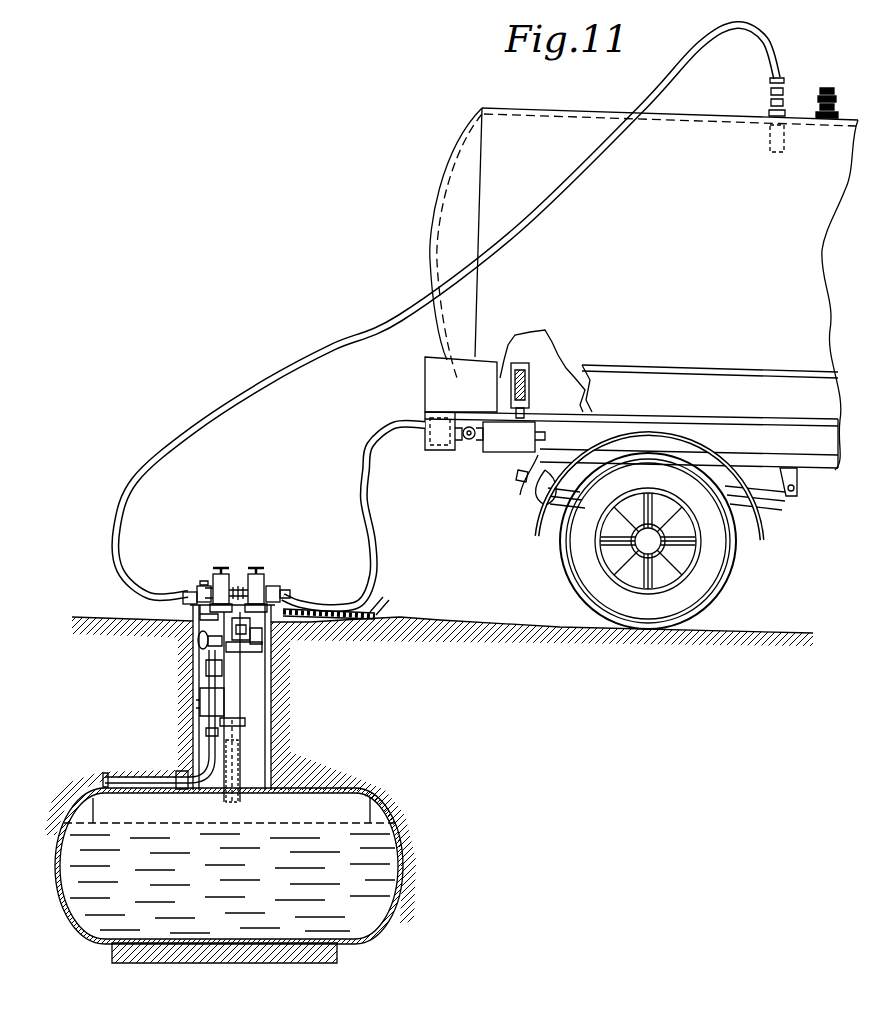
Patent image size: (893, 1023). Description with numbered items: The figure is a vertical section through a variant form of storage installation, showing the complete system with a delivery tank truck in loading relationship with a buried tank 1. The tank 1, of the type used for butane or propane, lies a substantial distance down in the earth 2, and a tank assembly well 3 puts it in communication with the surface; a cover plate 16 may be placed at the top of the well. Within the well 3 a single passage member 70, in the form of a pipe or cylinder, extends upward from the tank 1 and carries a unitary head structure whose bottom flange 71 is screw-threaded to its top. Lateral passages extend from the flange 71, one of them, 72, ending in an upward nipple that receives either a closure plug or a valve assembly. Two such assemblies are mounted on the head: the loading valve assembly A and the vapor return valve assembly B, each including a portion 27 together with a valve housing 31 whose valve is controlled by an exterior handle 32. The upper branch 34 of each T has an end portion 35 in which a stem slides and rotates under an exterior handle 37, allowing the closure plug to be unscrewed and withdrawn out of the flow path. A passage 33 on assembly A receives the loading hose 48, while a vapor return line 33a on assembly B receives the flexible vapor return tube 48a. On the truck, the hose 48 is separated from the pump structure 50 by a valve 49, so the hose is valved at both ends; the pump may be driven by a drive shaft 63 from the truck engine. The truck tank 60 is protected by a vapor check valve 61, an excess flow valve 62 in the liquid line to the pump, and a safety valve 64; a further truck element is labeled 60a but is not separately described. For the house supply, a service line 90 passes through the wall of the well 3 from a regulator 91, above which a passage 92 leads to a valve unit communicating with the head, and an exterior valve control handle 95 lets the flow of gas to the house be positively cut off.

The buried tank 1 is at (348, 792).
The earth 2 is at (415, 627).
The tank assembly well 3 is at (190, 714).
The cover plate 16 is at (318, 612).
The valve assembly portion 27 is at (239, 626).
The valve housing 31 is at (199, 586).
The exterior handle 32 is at (205, 578).
The passage 33 is at (283, 592).
The vapor return line 33a is at (188, 603).
The upper branch of the T 34 is at (215, 570).
The end portion 35 is at (200, 616).
The exterior handle 37 is at (236, 573).
The hose 48 is at (382, 533).
The flexible vapor return tube 48a is at (275, 372).
The valve 49 is at (470, 447).
The pump structure 50 is at (500, 455).
The tank 60 is at (450, 162).
The truck wheel 60a is at (712, 568).
The vapor check valve 61 is at (770, 140).
The excess flow valve 62 is at (530, 375).
The drive shaft 63 is at (526, 483).
The safety valve 64 is at (832, 92).
The single passage member 70 is at (236, 756).
The bottom flange 71 is at (258, 652).
The lateral extension 72 is at (262, 640).
The service line 90 is at (207, 768).
The regulator 91 is at (199, 697).
The passage 92 is at (206, 668).
The exterior valve control handle 95 is at (200, 642).
The loading valve assembly A is at (258, 558).
The vapor return valve assembly B is at (223, 558).